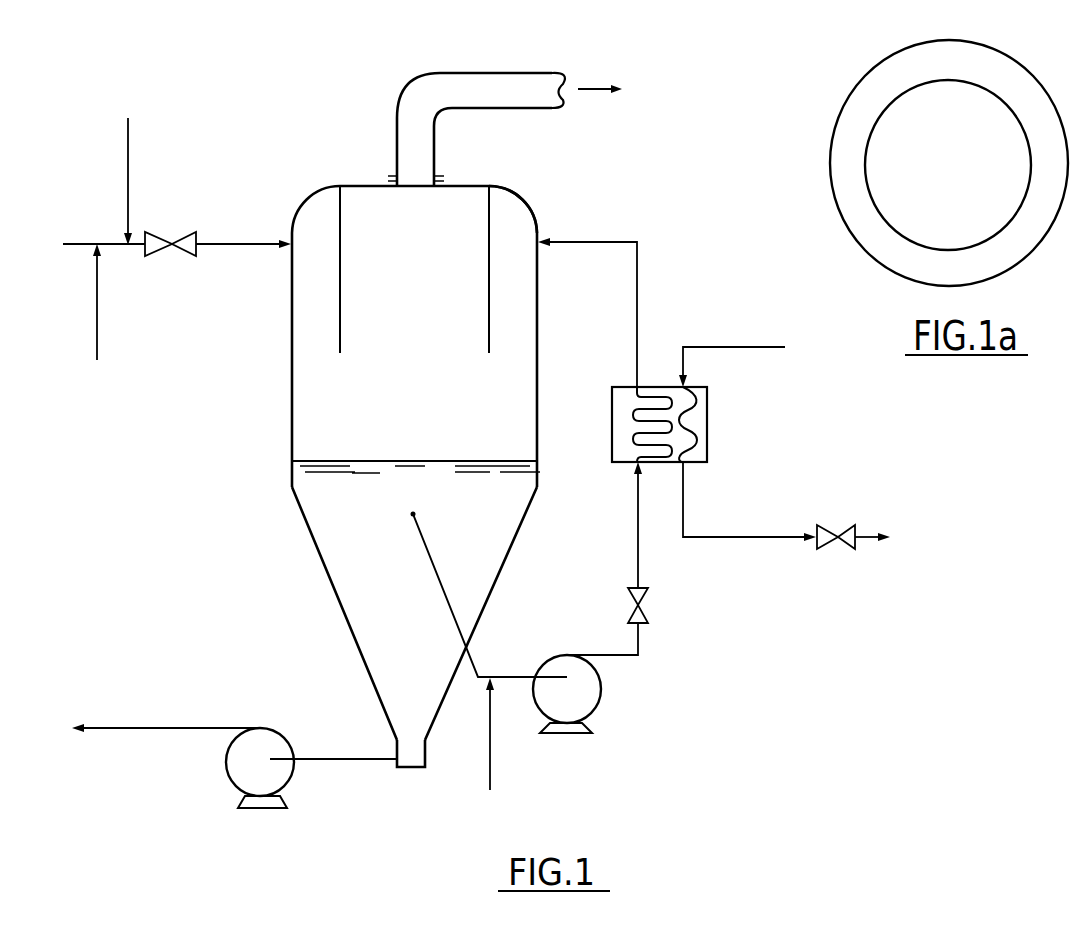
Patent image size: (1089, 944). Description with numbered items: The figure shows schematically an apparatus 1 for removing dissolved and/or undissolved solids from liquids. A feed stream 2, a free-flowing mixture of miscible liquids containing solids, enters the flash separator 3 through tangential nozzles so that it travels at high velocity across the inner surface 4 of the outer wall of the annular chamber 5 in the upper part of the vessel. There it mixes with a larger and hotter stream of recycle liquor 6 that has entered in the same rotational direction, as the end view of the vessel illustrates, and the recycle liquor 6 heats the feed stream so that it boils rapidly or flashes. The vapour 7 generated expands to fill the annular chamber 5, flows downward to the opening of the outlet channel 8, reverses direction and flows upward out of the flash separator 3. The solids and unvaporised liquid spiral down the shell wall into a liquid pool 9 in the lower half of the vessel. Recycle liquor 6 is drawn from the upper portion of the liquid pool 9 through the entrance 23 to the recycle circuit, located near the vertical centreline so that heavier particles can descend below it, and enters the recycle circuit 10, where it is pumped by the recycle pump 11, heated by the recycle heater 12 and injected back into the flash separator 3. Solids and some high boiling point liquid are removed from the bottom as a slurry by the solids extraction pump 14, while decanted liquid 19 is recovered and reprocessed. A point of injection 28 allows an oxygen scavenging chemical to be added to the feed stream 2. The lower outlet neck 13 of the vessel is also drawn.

In FIG. 1, the apparatus 1 is at (196, 88).
In FIG. 1, the feed stream 2 is at (70, 243).
In FIG. 1A, the feed stream 2 is at (862, 225).
In FIG. 1, the flash separator 3 is at (292, 413).
In FIG. 1, the inner surface 4 is at (523, 207).
In FIG. 1, the annular chamber 5 is at (533, 237).
In FIG. 1, the recycle liquor 6 is at (612, 242).
In FIG. 1A, the recycle liquor 6 is at (842, 142).
In FIG. 1, the vapour 7 is at (612, 87).
In FIG. 1, the outlet channel 8 is at (410, 192).
In FIG. 1, the liquid pool 9 is at (340, 545).
In FIG. 1, the recycle circuit 10 is at (455, 617).
In FIG. 1, the recycle pump 11 is at (603, 694).
In FIG. 1, the recycle heater 12 is at (695, 430).
In FIG. 1, the outlet neck 13 is at (427, 750).
In FIG. 1, the solids extraction pump 14 is at (233, 787).
In FIG. 1, the decanted liquid 19 is at (297, 532).
In FIG. 1, the entrance to the recycle circuit 23 is at (413, 514).
In FIG. 1, the point of injection 28 is at (127, 164).